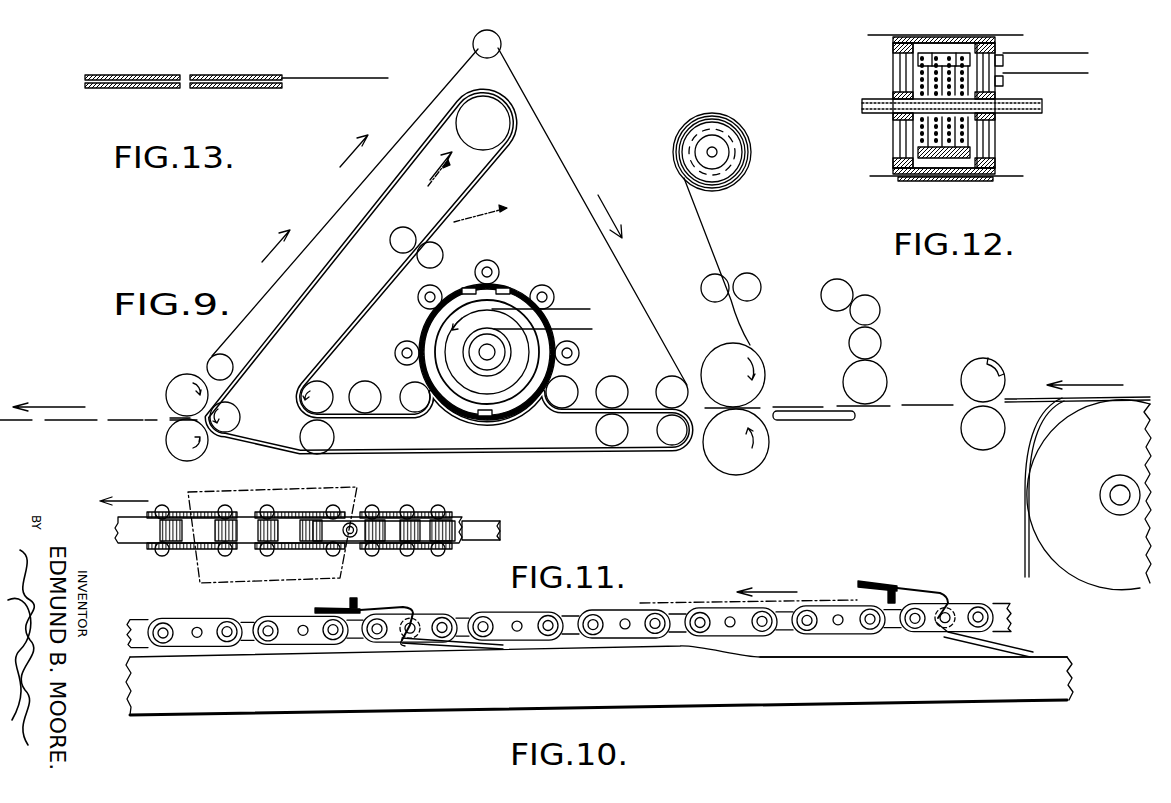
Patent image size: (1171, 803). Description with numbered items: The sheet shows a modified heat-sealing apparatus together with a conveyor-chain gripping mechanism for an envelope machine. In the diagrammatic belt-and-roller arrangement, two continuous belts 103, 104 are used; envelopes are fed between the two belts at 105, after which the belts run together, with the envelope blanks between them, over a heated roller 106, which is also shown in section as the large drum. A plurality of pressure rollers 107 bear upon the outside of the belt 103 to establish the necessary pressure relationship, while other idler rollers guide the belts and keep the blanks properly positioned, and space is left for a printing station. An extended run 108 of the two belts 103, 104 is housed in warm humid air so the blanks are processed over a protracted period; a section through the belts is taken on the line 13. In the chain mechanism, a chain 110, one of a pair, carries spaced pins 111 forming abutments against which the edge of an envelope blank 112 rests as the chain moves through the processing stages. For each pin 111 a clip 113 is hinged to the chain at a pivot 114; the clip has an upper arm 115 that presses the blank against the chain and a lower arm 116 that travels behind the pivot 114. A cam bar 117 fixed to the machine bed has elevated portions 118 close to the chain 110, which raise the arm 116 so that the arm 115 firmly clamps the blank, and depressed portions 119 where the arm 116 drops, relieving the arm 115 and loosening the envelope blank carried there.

In FIG. 9, the section line 13 is at (453, 208).
In FIG. 9, the continuous belt 103 is at (637, 282).
In FIG. 13, the continuous belt 103 is at (238, 77).
In FIG. 12, the continuous belt 103 is at (995, 174).
In FIG. 9, the continuous belt 104 is at (403, 453).
In FIG. 13, the continuous belt 104 is at (250, 86).
In FIG. 12, the continuous belt 104 is at (990, 178).
In FIG. 9, the feed point 105 is at (687, 407).
In FIG. 9, the heated roller 106 is at (496, 412).
In FIG. 12, the heated roller 106 is at (1006, 166).
In FIG. 9, the pressure rollers 107 is at (545, 286).
In FIG. 9, the extended run 108 is at (487, 154).
In FIG. 10, the chain 110 is at (617, 605).
In FIG. 11, the pin 111 is at (352, 524).
In FIG. 10, the pin 111 is at (360, 607).
In FIG. 11, the envelope blank 112 is at (357, 487).
In FIG. 10, the clip 113 is at (400, 610).
In FIG. 10, the clip pivot 114 is at (400, 642).
In FIG. 10, the upper arm 115 is at (320, 609).
In FIG. 10, the lower arm 116 is at (463, 648).
In FIG. 10, the cam bar 117 is at (614, 650).
In FIG. 10, the elevated portion 118 is at (533, 648).
In FIG. 10, the depressed portion 119 is at (820, 657).